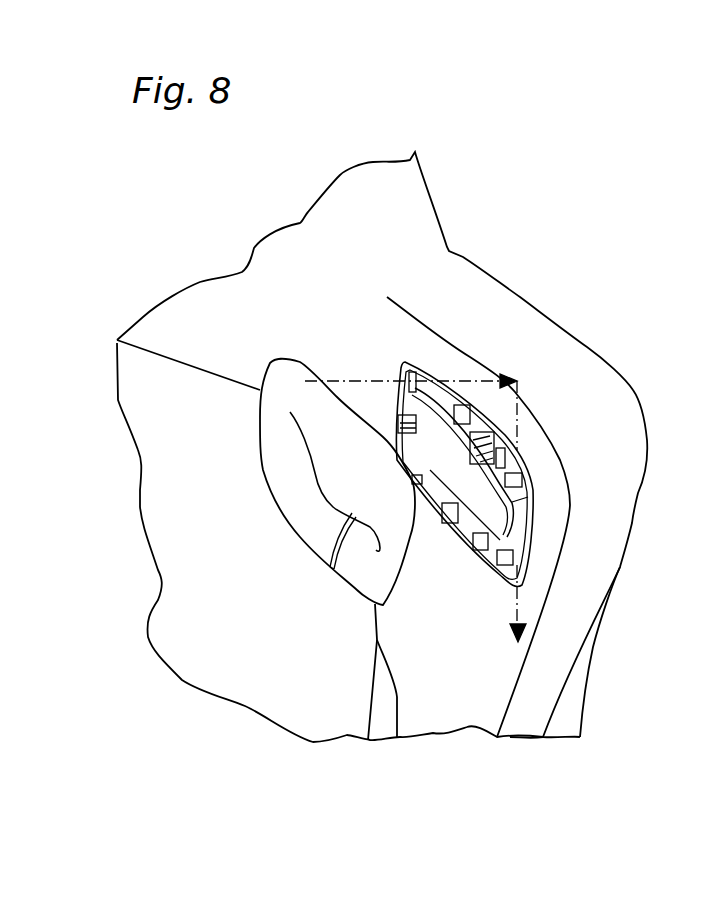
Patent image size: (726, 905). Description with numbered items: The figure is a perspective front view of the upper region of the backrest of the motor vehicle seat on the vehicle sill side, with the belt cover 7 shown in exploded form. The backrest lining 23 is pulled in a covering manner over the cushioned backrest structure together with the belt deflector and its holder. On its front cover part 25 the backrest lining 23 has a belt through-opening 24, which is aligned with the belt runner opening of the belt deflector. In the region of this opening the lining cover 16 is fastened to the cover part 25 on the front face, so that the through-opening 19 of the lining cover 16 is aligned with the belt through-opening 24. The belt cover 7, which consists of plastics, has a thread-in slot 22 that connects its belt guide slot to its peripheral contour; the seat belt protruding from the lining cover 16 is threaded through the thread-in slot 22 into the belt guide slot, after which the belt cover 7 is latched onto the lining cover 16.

The belt cover 7 is at (287, 503).
The lining cover 16 is at (507, 418).
The through-opening 19 is at (500, 508).
The thread-in slot 22 is at (327, 560).
The backrest lining 23 is at (270, 233).
The belt through-opening 24 is at (307, 447).
The cover part 25 is at (467, 693).